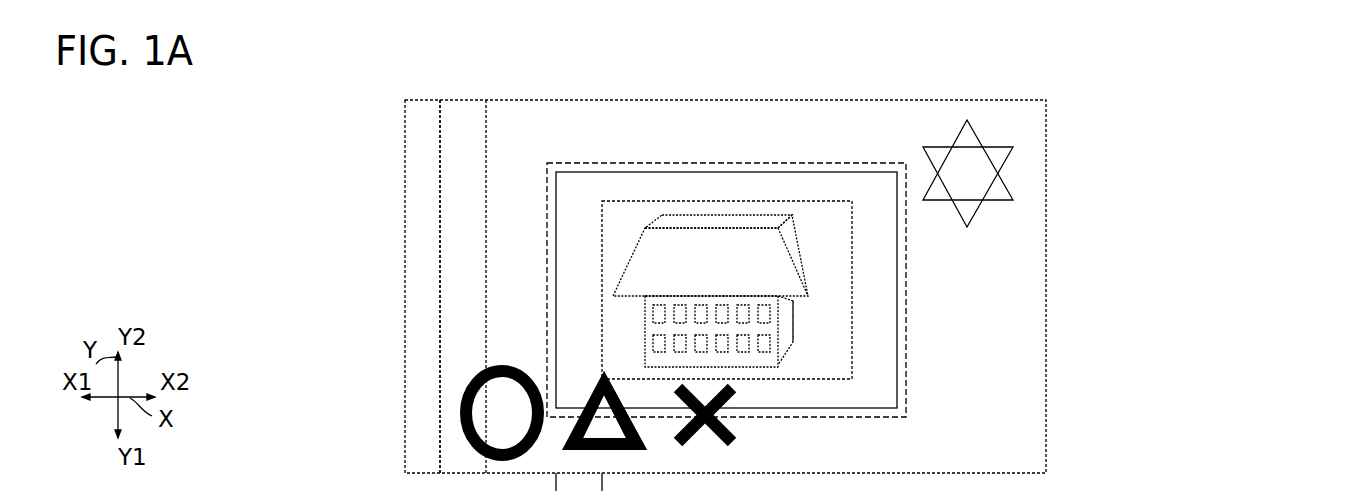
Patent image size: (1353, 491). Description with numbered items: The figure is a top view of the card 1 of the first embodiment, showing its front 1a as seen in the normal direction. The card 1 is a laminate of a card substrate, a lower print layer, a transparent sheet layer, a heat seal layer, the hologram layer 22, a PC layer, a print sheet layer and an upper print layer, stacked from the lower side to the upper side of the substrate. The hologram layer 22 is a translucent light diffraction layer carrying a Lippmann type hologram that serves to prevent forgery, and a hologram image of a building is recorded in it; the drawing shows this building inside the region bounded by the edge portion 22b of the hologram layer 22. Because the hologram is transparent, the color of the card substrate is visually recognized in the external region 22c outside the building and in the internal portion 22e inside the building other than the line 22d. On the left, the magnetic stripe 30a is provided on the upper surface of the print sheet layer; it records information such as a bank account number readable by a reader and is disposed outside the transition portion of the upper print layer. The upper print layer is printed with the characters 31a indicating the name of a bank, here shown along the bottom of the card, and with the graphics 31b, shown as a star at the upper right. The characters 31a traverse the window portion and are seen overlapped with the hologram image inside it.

The card 1 is at (240, 136).
The front 1a is at (435, 153).
The magnetic stripe 30a is at (463, 242).
The hologram layer 22 is at (981, 291).
The edge portion 22b is at (545, 300).
The external region 22c is at (835, 340).
The line 22d is at (792, 312).
The internal portion 22e is at (777, 278).
The characters 31a is at (1018, 393).
The graphics 31b is at (997, 186).